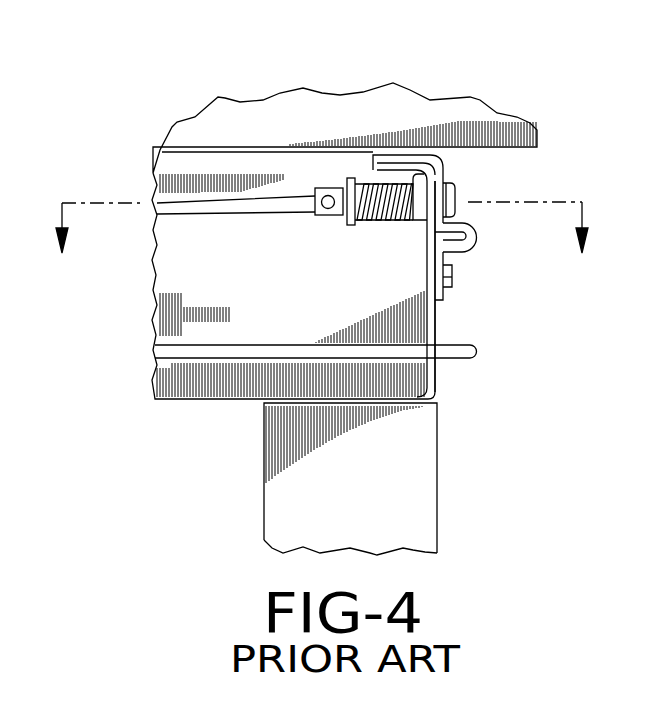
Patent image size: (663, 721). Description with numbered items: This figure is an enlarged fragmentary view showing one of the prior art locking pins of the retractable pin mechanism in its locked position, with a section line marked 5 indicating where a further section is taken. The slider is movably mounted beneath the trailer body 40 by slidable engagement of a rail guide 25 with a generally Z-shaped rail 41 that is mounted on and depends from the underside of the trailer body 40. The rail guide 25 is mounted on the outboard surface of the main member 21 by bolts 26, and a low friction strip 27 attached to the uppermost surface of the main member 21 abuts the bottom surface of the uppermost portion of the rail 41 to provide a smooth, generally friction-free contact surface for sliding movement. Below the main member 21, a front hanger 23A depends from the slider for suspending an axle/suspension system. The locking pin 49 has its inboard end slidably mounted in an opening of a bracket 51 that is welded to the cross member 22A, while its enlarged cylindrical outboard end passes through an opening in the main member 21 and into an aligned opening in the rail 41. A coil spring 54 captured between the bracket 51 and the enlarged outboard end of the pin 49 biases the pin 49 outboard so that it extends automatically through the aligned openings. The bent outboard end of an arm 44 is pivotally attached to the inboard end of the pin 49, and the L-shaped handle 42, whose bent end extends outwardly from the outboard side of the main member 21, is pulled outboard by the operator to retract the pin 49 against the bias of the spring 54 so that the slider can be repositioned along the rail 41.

The section line 5- 5 is at (322, 244).
The trailer body 40 is at (409, 78).
The low friction strip 27 is at (390, 160).
The rail 41 is at (443, 160).
The locking pin 49 is at (455, 193).
The rail guide 25 is at (475, 232).
The bolt 26 is at (450, 287).
The arm 44 is at (218, 205).
The bracket 51 is at (349, 219).
The coil spring 54 is at (388, 218).
The handle 42 is at (477, 347).
The main member 21 is at (463, 383).
The cross member 22A is at (196, 412).
The front hanger 23A is at (447, 465).